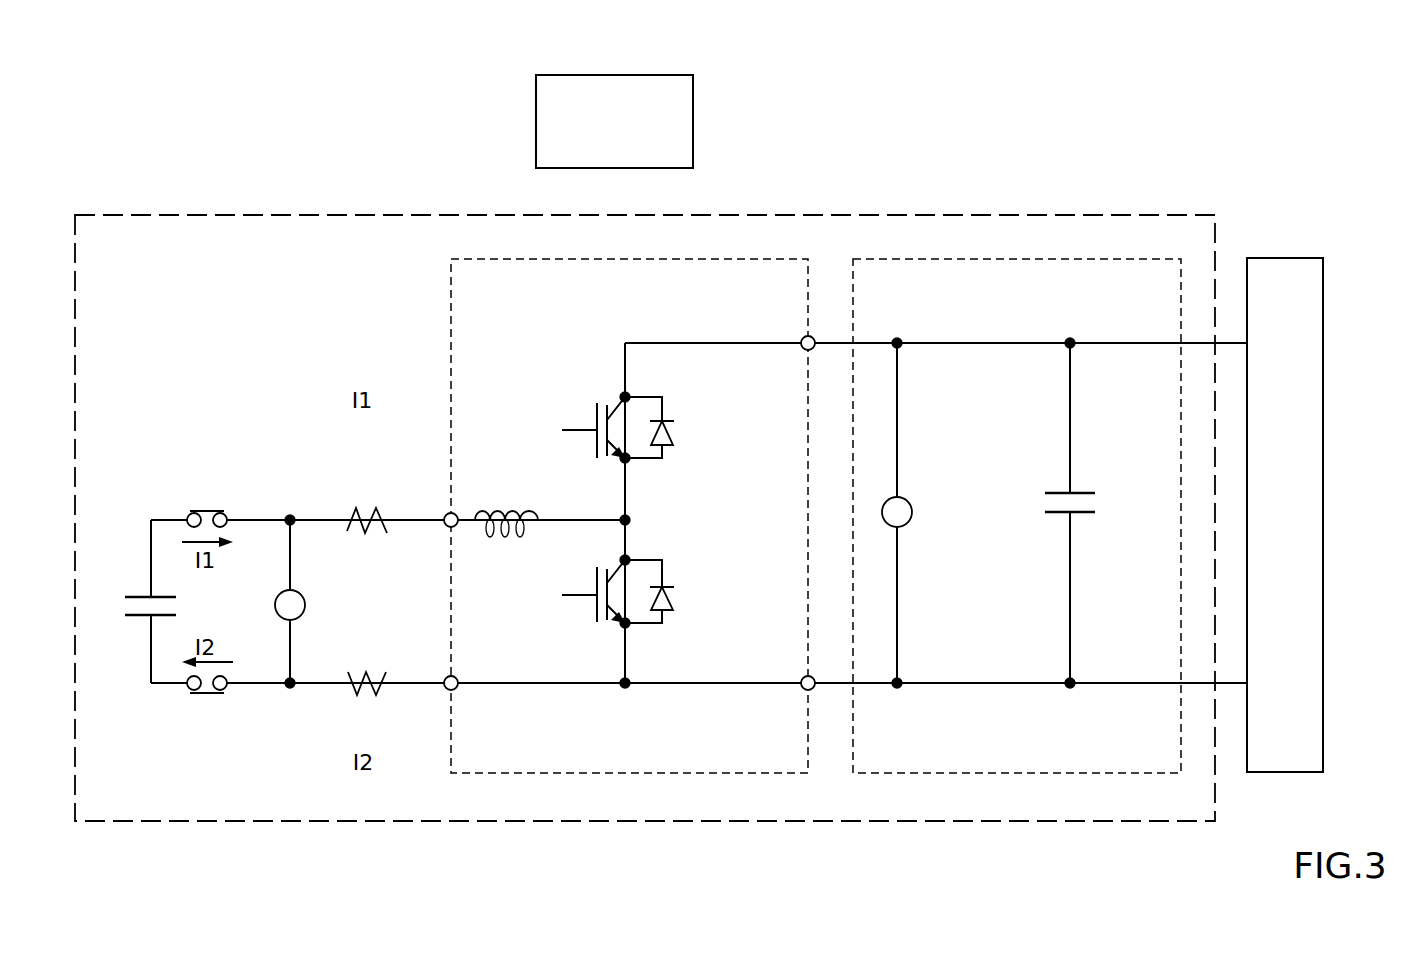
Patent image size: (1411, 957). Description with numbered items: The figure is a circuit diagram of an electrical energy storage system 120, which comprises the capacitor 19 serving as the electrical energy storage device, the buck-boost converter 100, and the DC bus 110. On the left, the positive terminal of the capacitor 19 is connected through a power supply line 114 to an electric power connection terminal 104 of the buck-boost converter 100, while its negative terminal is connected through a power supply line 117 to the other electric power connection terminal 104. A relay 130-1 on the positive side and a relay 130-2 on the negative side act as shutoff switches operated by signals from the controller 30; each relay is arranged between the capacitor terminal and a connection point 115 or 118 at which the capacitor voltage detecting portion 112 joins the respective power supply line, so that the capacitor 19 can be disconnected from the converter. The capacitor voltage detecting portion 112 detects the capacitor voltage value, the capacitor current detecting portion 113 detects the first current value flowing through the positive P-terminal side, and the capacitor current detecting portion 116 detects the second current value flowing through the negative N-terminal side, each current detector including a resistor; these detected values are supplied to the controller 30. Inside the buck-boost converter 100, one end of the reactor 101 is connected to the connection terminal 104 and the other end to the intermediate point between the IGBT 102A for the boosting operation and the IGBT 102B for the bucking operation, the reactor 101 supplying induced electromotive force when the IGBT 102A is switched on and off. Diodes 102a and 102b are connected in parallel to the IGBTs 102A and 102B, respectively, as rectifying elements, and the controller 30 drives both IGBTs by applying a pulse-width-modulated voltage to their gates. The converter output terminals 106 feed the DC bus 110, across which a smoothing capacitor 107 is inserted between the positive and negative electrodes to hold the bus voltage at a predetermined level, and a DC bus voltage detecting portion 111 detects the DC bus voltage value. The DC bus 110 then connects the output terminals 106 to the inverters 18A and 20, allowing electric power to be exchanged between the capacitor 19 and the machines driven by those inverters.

The controller 30 is at (473, 155).
The electrical energy storage system 120 is at (1112, 213).
The buck-boost converter 100 is at (707, 258).
The DC bus 110 is at (1150, 257).
The power supply line 114 is at (151, 555).
The power supply line 117 is at (151, 650).
The capacitor 19 is at (176, 603).
The relay 130-1 is at (192, 508).
The relay 130-2 is at (192, 695).
The connection point 115 is at (290, 514).
The connection point 118 is at (290, 690).
The capacitor voltage detecting portion 112 is at (306, 605).
The capacitor current detecting portion 113 is at (368, 508).
The capacitor current detecting portion 116 is at (365, 696).
The electric power connection terminals 104 is at (445, 526).
The reactor 101 is at (515, 508).
The IGBT for the bucking operation 102B is at (602, 405).
The diode 102b is at (672, 433).
The IGBT for the boosting operation 102A is at (598, 628).
The diode 102a is at (672, 598).
The output terminals 106 is at (803, 338).
The DC bus voltage detecting portion 111 is at (912, 512).
The smoothing capacitor 107 is at (1100, 505).
The inverter 18A is at (1287, 258).
The inverter 20 is at (1285, 487).